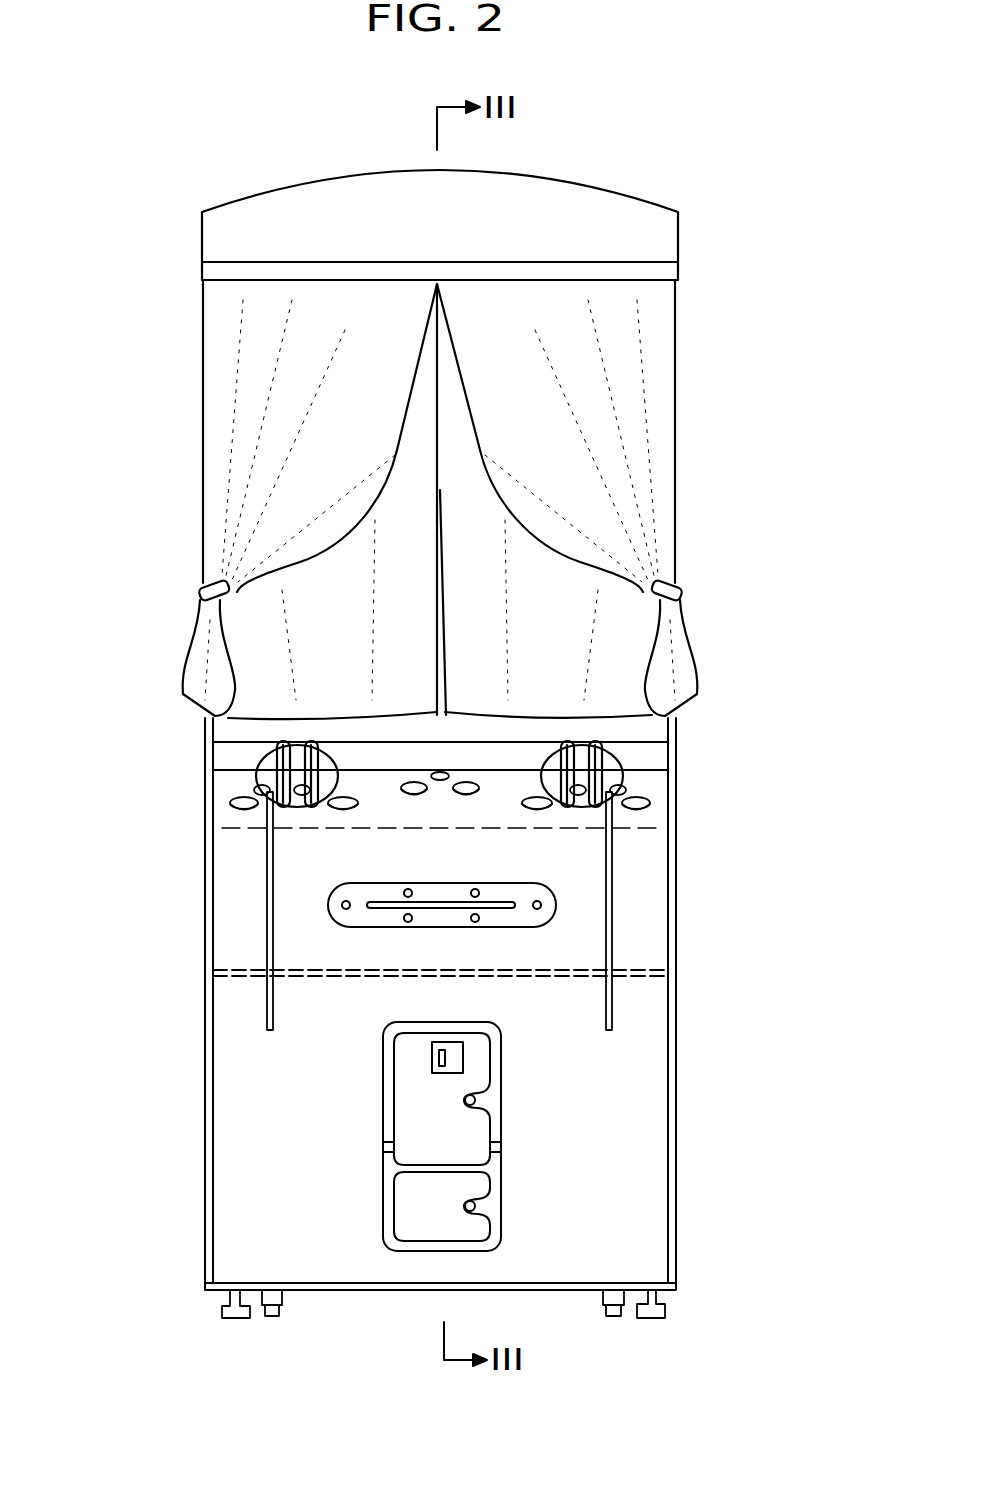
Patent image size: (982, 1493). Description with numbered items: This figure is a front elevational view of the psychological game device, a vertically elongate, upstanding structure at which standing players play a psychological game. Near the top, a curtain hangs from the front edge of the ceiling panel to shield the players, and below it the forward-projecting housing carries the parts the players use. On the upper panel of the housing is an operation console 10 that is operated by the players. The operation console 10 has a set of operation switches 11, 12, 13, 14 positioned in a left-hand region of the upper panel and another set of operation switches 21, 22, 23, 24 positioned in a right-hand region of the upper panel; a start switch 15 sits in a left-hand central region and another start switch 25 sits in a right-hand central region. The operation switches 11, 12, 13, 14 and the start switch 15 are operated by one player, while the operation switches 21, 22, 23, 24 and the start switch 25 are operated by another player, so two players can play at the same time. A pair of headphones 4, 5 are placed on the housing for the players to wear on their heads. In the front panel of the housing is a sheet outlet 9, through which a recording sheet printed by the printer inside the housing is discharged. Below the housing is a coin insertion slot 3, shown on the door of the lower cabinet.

The coin insertion slot 3 is at (452, 1060).
The headphone 4 is at (268, 783).
The headphone 5 is at (612, 783).
The sheet outlet 9 is at (357, 918).
The operation console 10 is at (97, 800).
The operation switch 11 is at (242, 798).
The operation switch 12 is at (264, 798).
The operation switch 13 is at (302, 798).
The operation switch 14 is at (340, 810).
The start switch 15 is at (410, 796).
The operation switch 21 is at (540, 810).
The operation switch 22 is at (578, 798).
The operation switch 23 is at (616, 798).
The operation switch 24 is at (638, 798).
The start switch 25 is at (470, 796).